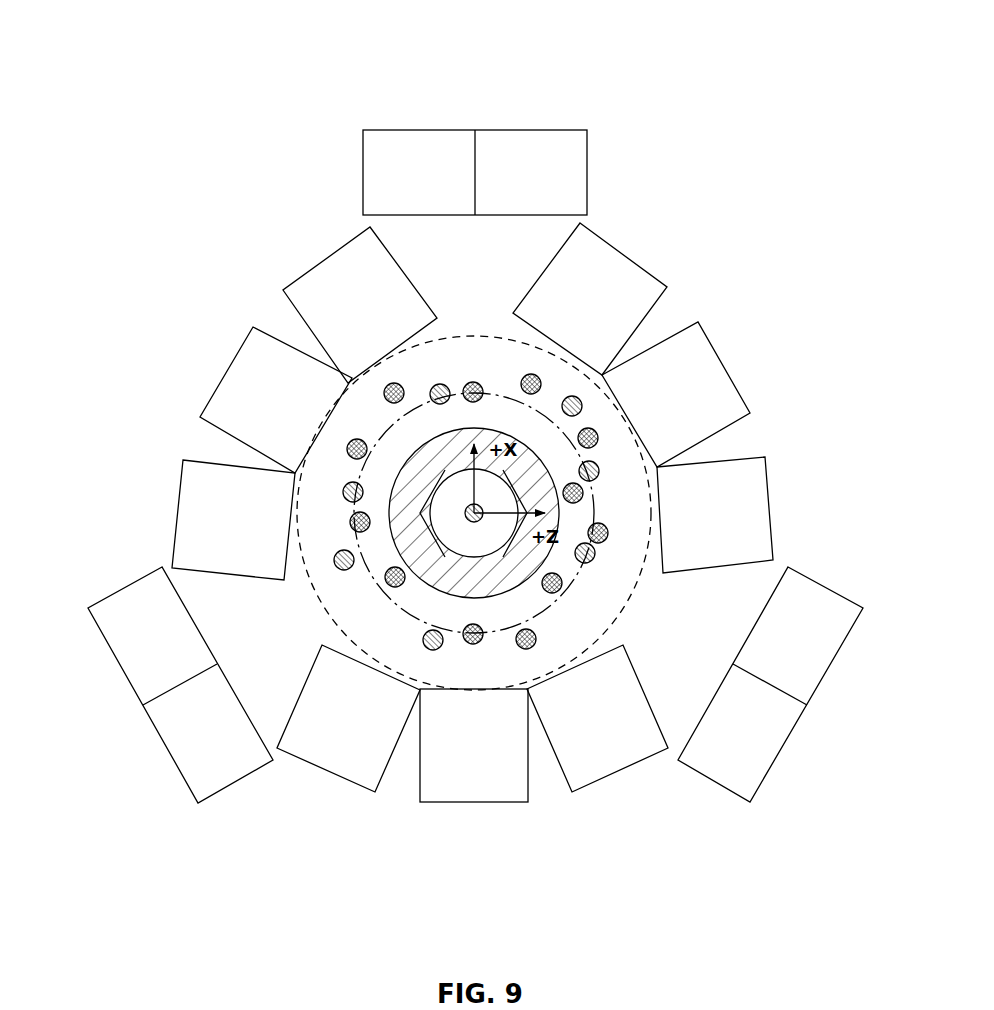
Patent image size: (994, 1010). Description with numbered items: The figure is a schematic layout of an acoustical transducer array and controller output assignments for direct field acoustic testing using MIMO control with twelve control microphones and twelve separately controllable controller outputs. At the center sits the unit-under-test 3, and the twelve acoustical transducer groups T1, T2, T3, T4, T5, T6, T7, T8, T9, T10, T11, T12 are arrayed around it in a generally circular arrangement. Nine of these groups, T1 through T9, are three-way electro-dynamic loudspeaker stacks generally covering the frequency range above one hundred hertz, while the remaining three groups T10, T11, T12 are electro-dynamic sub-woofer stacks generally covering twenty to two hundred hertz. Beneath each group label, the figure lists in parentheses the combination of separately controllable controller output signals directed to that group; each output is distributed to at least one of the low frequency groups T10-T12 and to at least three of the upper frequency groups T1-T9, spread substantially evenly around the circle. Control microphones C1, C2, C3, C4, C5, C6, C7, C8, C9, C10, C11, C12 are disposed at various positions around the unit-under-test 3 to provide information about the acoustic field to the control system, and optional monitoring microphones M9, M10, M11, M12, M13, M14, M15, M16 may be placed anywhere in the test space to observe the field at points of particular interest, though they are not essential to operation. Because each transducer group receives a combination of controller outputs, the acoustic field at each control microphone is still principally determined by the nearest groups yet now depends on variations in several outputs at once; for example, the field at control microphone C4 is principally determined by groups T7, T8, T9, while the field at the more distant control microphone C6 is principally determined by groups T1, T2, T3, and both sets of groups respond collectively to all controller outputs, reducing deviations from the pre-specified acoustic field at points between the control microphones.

The unit-under-test 3 is at (556, 562).
The acoustical transducer group T1 is at (623, 247).
The acoustical transducer group T2 is at (733, 364).
The acoustical transducer group T3 is at (778, 504).
The acoustical transducer group T4 is at (615, 784).
The acoustical transducer group T5 is at (473, 810).
The acoustical transducer group T6 is at (320, 778).
The acoustical transducer group T7 is at (167, 511).
The acoustical transducer group T8 is at (228, 357).
The acoustical transducer group T9 is at (322, 249).
The low frequency transducer group T10 is at (473, 121).
The low frequency transducer group T11 is at (812, 720).
The low frequency transducer group T12 is at (140, 711).
The control microphone C1 is at (477, 644).
The control microphone C2 is at (393, 592).
The control microphone C3 is at (347, 528).
The control microphone C4 is at (350, 439).
The control microphone C5 is at (477, 380).
The control microphone C6 is at (604, 444).
The control microphone C7 is at (615, 532).
The control microphone C8 is at (528, 372).
The control microphone C9 is at (589, 498).
The control microphone C10 is at (570, 599).
The control microphone C11 is at (549, 643).
The control microphone C12 is at (395, 406).
The monitoring microphone M9 is at (438, 651).
The monitoring microphone M10 is at (340, 571).
The monitoring microphone M11 is at (332, 500).
The monitoring microphone M12 is at (432, 381).
The monitoring microphone M13 is at (575, 394).
The monitoring microphone M14 is at (611, 474).
The monitoring microphone M15 is at (605, 558).
The monitoring microphone M16 is at (473, 526).